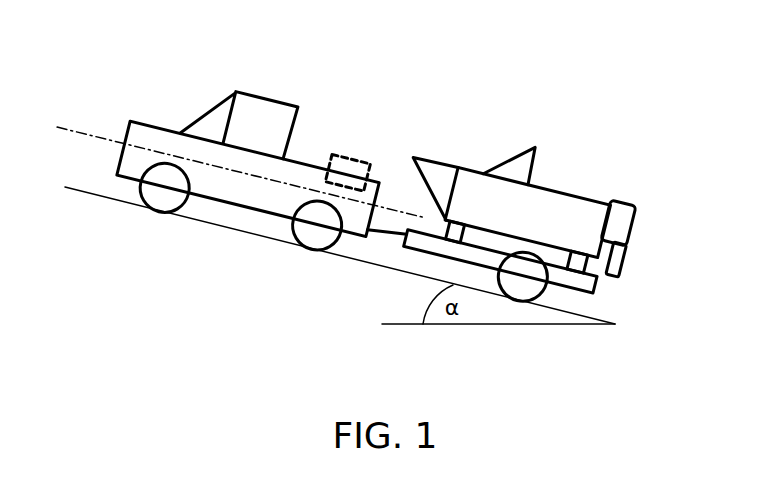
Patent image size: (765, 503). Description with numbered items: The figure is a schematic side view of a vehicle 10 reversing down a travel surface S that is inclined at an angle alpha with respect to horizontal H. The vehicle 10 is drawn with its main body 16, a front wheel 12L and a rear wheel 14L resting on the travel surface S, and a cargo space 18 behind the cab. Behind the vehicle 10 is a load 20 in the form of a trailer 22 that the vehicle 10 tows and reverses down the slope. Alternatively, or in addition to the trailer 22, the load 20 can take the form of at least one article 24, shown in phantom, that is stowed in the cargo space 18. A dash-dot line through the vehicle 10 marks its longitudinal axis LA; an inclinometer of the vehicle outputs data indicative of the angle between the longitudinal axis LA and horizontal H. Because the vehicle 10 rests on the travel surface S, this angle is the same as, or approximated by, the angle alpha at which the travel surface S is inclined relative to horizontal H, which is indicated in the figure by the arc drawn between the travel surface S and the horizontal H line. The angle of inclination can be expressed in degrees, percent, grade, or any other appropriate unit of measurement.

The vehicle 10 is at (158, 58).
The front wheel 12L is at (161, 202).
The rear wheel 14L is at (313, 242).
The main body 16 is at (278, 100).
The cargo space 18 is at (314, 164).
The load 20 is at (452, 165).
The trailer 22 is at (602, 288).
The article 24 is at (352, 153).
The longitudinal axis LA is at (88, 130).
The travel surface S is at (90, 196).
The horizontal H is at (545, 327).